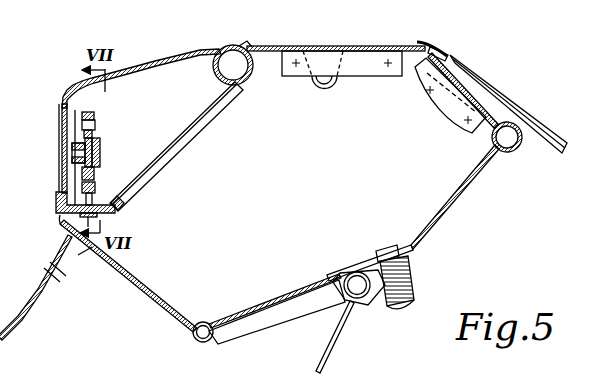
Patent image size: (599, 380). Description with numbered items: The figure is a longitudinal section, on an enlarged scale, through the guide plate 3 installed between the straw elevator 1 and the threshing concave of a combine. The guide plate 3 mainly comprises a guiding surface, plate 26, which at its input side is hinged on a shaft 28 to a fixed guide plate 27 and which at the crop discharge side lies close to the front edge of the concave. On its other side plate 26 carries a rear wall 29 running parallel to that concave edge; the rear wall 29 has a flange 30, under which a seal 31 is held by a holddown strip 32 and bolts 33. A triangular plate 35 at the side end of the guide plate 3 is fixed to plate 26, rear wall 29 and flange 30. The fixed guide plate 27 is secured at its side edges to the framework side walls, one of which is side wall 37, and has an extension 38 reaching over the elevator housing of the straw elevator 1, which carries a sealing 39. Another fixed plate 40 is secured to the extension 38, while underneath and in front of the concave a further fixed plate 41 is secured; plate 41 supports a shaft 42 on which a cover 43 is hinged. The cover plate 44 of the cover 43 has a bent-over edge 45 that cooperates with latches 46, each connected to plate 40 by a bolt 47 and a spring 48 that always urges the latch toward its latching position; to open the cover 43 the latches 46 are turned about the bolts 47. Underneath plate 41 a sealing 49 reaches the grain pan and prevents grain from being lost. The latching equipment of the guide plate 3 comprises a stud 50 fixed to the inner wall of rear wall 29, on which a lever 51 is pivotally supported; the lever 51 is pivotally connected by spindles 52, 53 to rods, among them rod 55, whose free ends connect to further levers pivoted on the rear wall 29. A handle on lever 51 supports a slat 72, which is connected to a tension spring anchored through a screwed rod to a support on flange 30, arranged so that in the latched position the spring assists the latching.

The straw elevator 1 is at (542, 112).
The guide plate 3 is at (143, 54).
The guiding surface plate 26 is at (187, 51).
The fixed guide plate 27 is at (341, 46).
The shaft 28 is at (216, 71).
The rear wall 29 is at (62, 130).
The flange 30 is at (92, 200).
The seal 31 is at (114, 211).
The holddown strip 32 is at (58, 212).
The bolts 33 is at (63, 227).
The triangular plate 35 is at (166, 106).
The side wall 37 is at (135, 270).
The extension 38 is at (462, 92).
The sealing 39 is at (426, 42).
The fixed plate 40 is at (456, 190).
The fixed plate 41 is at (152, 300).
The shaft 42 is at (200, 342).
The cover 43 is at (277, 314).
The cover plate 44 is at (263, 298).
The bent over edge 45 is at (360, 303).
The latch 46 is at (333, 346).
The bolt 47 is at (391, 247).
The spring 48 is at (416, 283).
The sealing 49 is at (18, 315).
The stud 50 is at (72, 152).
The lever 51 is at (95, 114).
The spring 52 is at (96, 126).
The spindle 53 is at (98, 178).
The rod 55 is at (80, 112).
The slat 72 is at (100, 148).